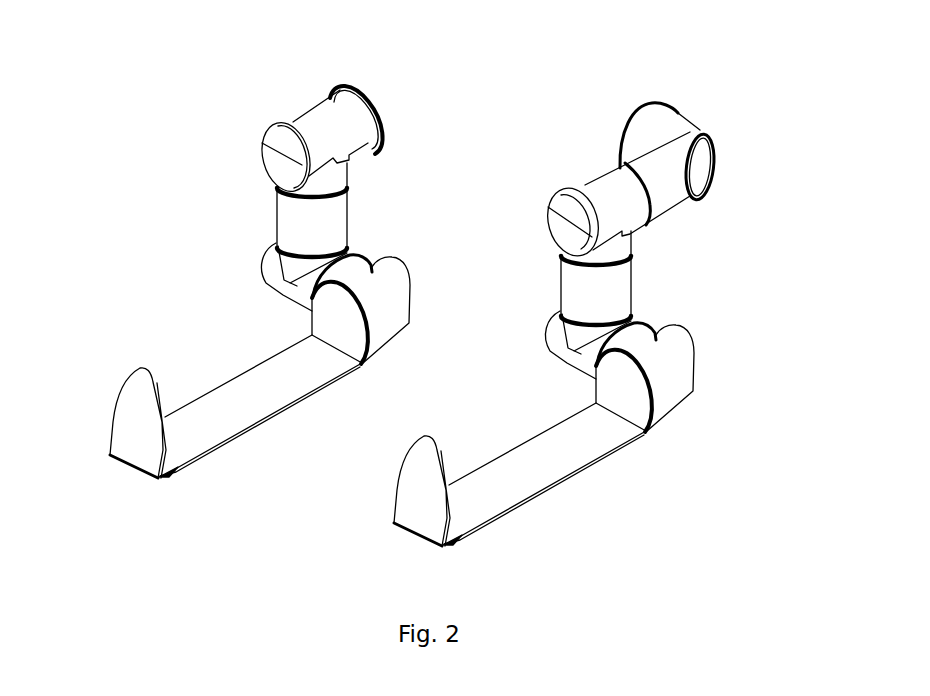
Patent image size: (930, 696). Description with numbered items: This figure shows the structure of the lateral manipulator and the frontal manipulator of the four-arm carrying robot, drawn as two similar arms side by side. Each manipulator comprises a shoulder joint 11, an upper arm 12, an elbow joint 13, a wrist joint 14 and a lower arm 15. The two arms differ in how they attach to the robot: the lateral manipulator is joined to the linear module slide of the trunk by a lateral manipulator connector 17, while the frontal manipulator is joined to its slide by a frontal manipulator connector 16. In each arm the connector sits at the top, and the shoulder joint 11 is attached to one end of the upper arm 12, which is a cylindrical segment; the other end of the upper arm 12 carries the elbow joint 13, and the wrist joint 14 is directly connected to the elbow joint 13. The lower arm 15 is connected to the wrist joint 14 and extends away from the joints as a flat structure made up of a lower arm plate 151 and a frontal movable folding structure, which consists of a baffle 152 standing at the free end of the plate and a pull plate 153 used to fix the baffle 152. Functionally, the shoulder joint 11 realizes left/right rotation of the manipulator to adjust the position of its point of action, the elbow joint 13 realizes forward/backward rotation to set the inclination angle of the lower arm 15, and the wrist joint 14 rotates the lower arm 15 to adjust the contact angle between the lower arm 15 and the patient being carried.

The shoulder joint 11 is at (500, 133).
The upper arm 12 is at (595, 292).
The elbow joint 13 is at (295, 280).
The wrist joint 14 is at (640, 337).
The lower arm 15 is at (415, 462).
The frontal manipulator connector 16 is at (357, 105).
The lateral manipulator connector 17 is at (668, 128).
The lower arm plate 151 is at (502, 500).
The baffle 152 is at (420, 507).
The pull plate 153 is at (581, 545).